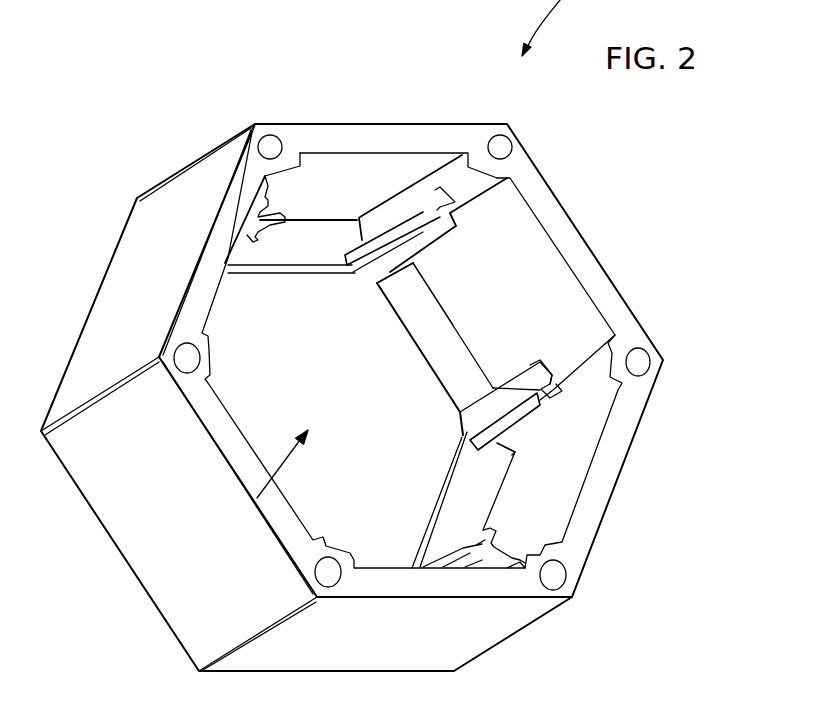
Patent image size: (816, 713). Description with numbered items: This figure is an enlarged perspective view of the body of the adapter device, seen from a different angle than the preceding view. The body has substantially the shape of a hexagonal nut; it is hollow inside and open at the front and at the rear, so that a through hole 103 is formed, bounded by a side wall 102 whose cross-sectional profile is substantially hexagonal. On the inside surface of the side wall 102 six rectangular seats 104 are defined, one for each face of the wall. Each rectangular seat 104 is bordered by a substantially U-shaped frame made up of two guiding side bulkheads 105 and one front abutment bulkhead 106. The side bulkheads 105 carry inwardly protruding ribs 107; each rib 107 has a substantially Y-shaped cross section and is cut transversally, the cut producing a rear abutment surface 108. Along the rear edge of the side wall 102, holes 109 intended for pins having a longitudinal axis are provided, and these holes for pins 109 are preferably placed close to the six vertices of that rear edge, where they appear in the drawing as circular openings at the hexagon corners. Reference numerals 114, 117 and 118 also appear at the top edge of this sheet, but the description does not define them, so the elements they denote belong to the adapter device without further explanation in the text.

The side wall 102 is at (137, 300).
The through hole 103 is at (257, 498).
The rectangular seat 104 is at (563, 290).
The guiding side bulkhead 105 is at (398, 200).
The front abutment bulkhead 106 is at (442, 335).
The rib 107 is at (495, 402).
The rear abutment surface 108 is at (576, 400).
The hole for pin 109 is at (272, 150).
The component 114 is at (163, 0).
The component 117 is at (15, 17).
The component 118 is at (88, 0).